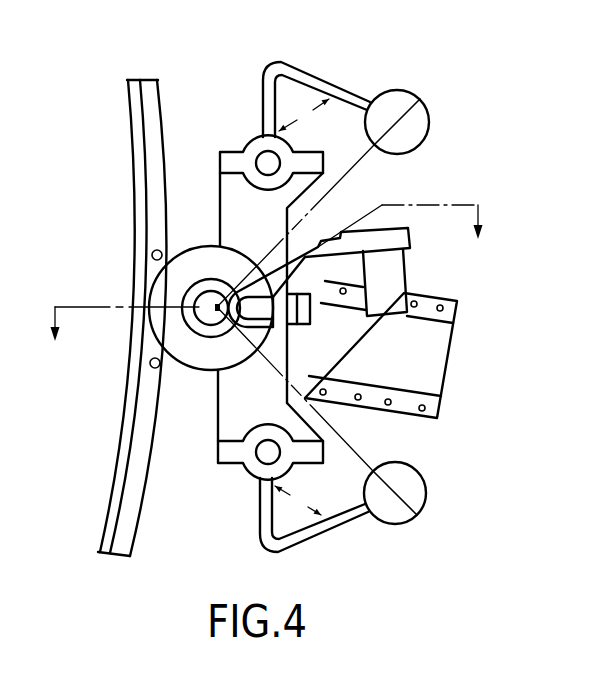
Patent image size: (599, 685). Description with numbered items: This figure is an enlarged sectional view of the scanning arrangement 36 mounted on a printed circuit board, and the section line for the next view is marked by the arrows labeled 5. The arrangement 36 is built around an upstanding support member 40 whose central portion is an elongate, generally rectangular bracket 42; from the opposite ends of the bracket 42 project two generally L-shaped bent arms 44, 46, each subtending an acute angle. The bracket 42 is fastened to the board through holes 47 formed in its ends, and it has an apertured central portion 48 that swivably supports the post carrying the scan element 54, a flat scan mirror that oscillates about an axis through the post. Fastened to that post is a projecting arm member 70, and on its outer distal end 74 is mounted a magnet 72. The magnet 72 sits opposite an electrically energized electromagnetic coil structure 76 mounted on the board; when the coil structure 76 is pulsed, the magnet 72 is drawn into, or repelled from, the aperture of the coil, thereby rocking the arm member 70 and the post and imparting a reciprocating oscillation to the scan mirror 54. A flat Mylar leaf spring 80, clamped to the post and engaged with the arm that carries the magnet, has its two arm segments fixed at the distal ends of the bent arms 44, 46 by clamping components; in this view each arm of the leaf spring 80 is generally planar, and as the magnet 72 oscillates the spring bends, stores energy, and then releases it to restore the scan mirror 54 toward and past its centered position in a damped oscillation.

The scanning arrangement 36 is at (458, 360).
The upstanding support member 40 is at (217, 424).
The elongate bracket 42 is at (219, 195).
The bent arm 44 is at (297, 67).
The bent arm 46 is at (263, 540).
The holes 47 is at (266, 158).
The apertured central portion 48 is at (202, 298).
The scan element 54 is at (107, 520).
The arm member 70 is at (320, 243).
The magnet 72 is at (410, 287).
The outer distal end 74 is at (407, 234).
The electromagnetic coil structure 76 is at (442, 342).
The flat leaf spring 80 is at (373, 160).
The section line 5- 5 is at (266, 290).